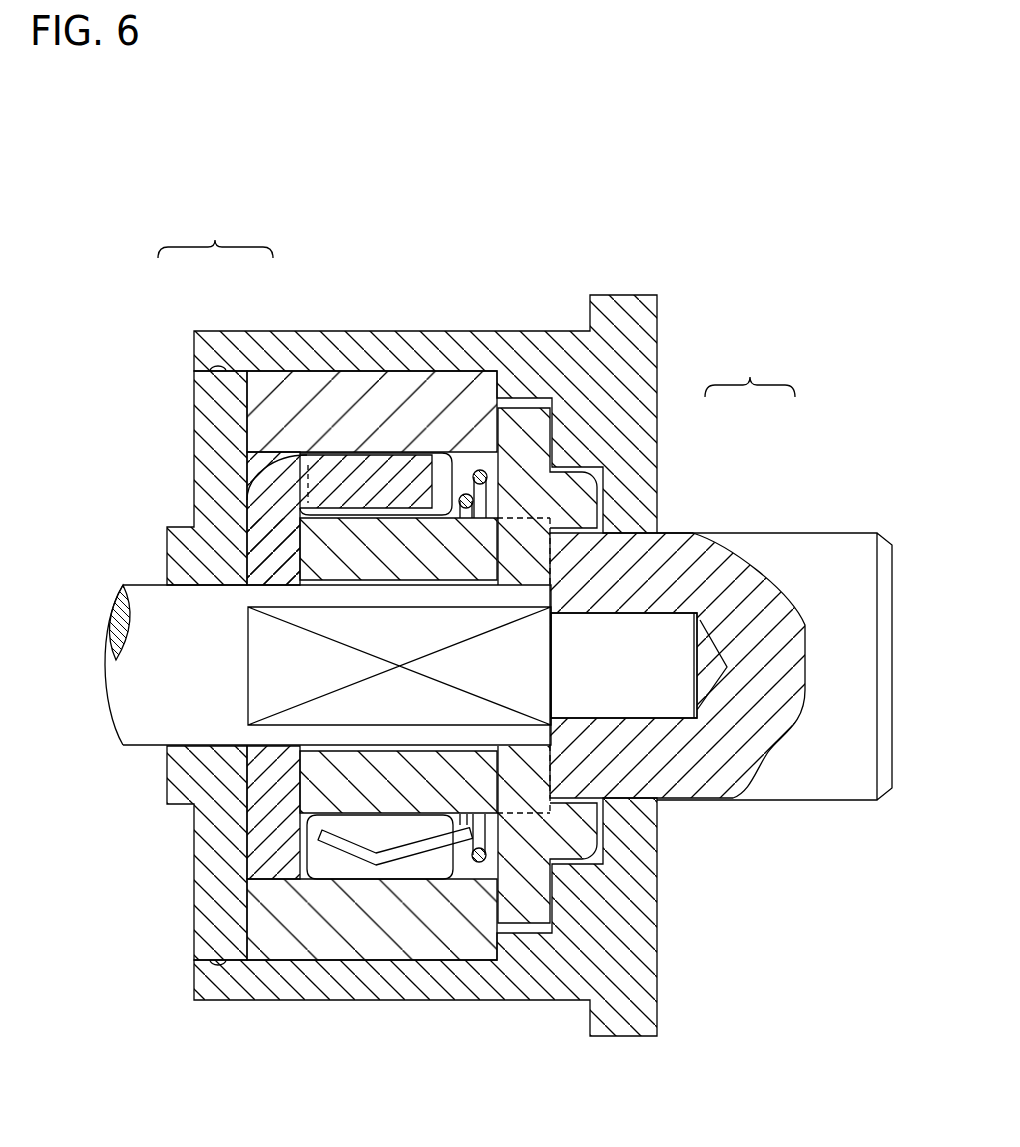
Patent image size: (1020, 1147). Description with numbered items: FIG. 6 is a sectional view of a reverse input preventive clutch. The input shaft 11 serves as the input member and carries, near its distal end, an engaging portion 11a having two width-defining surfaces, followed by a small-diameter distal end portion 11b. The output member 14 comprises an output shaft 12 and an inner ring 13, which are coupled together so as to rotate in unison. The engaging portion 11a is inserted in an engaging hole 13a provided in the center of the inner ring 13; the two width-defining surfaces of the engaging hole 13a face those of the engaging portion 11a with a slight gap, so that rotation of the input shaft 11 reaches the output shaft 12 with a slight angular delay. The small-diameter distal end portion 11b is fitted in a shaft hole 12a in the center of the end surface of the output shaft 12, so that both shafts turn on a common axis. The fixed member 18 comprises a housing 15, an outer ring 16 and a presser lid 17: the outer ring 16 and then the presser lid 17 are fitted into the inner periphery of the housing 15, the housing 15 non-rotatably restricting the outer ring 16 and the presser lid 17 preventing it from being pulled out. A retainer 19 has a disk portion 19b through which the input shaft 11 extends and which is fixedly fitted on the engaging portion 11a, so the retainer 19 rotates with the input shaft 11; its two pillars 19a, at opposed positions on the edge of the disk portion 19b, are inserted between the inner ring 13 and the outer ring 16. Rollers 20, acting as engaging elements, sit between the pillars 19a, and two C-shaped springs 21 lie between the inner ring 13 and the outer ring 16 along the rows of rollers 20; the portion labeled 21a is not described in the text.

The input shaft 11 is at (132, 728).
The engaging portion 11a is at (278, 653).
The small-diameter distal end portion 11b is at (620, 697).
The output shaft 12 is at (813, 562).
The shaft hole 12a is at (668, 716).
The inner ring 13 is at (480, 542).
The engaging hole 13a is at (473, 750).
The output member 14 is at (750, 368).
The housing 15 is at (292, 345).
The outer ring 16 is at (270, 387).
The presser lid 17 is at (200, 395).
The fixed member 18 is at (215, 230).
The retainer 19 is at (273, 483).
The pillars 19a is at (380, 470).
The disk portion 19b is at (267, 548).
The rollers 20 is at (442, 473).
The C-shaped springs 21 is at (480, 473).
The spring 21a is at (422, 847).